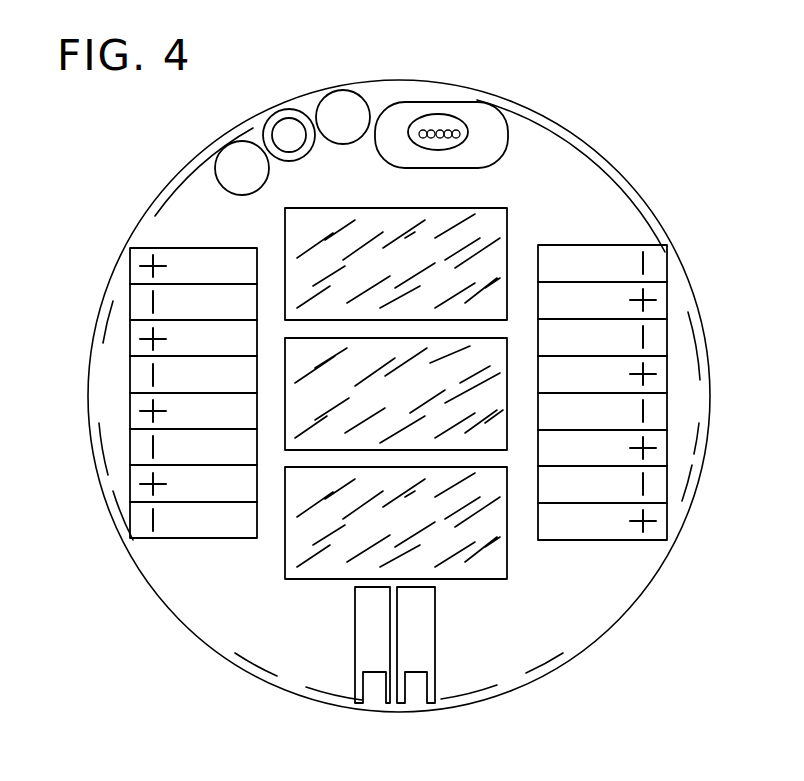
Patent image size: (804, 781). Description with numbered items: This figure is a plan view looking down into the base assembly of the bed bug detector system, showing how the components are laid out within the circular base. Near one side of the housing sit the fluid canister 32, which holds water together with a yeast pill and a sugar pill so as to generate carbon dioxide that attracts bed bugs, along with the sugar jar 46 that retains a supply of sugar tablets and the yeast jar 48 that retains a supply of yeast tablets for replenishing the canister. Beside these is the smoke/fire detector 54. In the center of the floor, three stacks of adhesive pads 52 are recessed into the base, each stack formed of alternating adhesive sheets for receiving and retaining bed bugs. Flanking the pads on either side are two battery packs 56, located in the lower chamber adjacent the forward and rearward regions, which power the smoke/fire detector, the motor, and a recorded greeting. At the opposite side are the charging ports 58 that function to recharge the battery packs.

The fluid canister 32 is at (288, 115).
The sugar jar 46 is at (230, 157).
The yeast jar 48 is at (343, 96).
The adhesive pads 52 is at (350, 277).
The smoke/fire detector 54 is at (467, 108).
The battery packs 56 is at (135, 270).
The terminals 58 is at (418, 703).